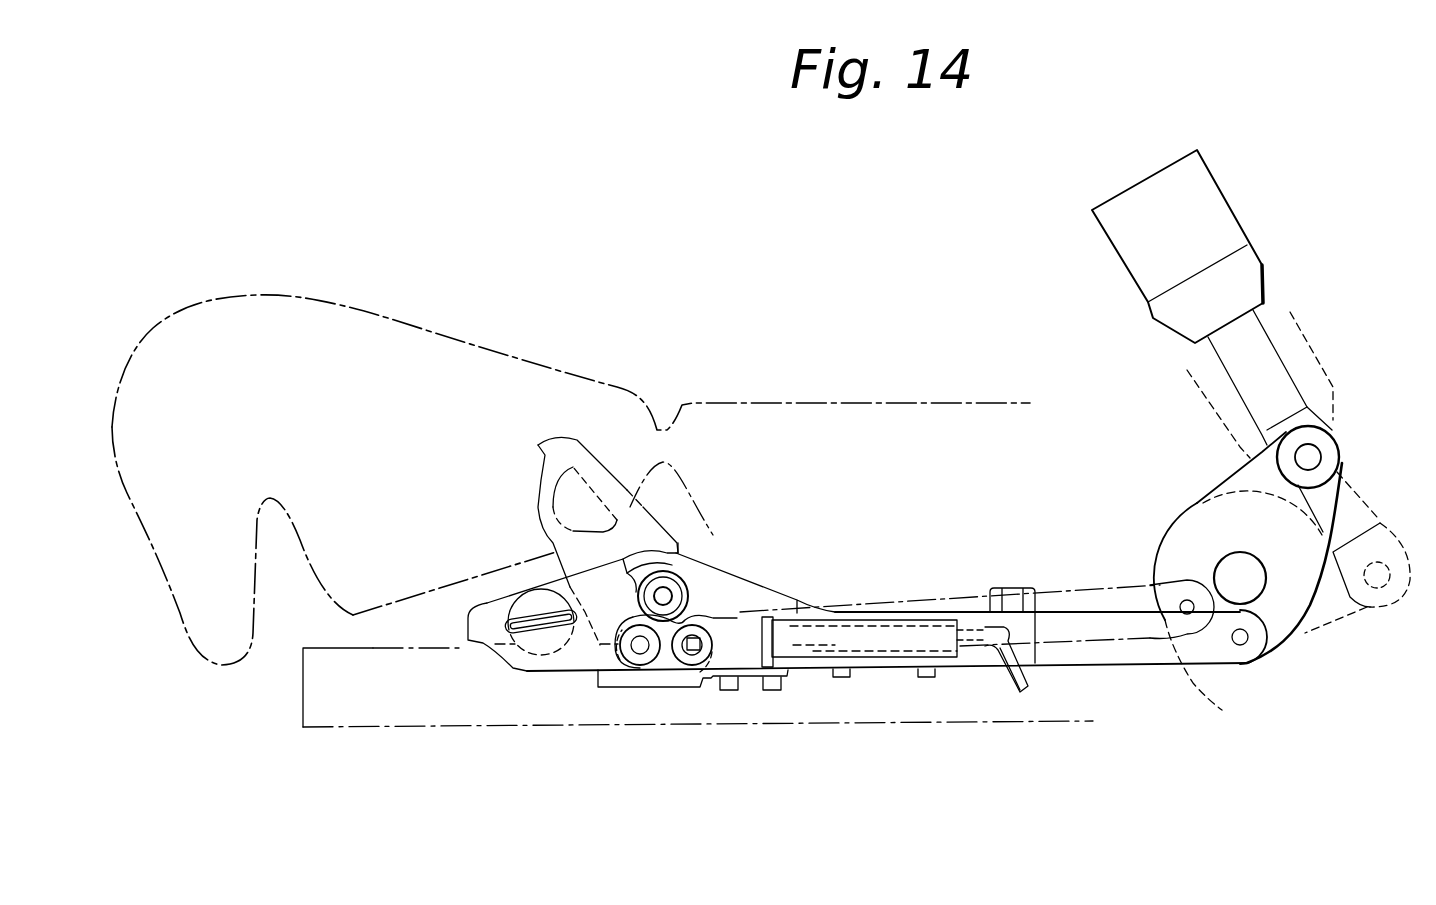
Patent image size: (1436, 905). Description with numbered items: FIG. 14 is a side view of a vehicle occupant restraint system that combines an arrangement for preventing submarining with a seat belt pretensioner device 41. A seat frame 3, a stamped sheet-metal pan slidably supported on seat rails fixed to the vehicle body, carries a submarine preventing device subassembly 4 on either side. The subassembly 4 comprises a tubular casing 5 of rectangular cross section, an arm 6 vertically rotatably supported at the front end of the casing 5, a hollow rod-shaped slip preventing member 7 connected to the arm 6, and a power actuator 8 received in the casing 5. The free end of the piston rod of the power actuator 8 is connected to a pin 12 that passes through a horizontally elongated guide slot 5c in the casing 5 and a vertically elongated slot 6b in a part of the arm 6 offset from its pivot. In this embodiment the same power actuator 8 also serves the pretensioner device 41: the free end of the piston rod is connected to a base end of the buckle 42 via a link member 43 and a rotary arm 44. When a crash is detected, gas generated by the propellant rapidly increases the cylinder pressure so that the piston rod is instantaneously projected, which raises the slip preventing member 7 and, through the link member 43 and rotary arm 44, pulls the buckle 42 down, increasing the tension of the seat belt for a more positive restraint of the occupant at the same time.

The seat frame 3 is at (433, 728).
The submarine preventing device subassembly 4 is at (767, 698).
The tubular casing 5 is at (927, 612).
The guide slot 5c is at (658, 662).
The arm 6 is at (577, 624).
The slot 6b is at (703, 640).
The slip preventing member 7 is at (527, 628).
The power actuator 8 is at (873, 622).
The pin 12 is at (703, 667).
The pretensioner device 41 is at (1320, 645).
The buckle 42 is at (1262, 262).
The link member 43 is at (1227, 675).
The rotary arm 44 is at (1163, 548).